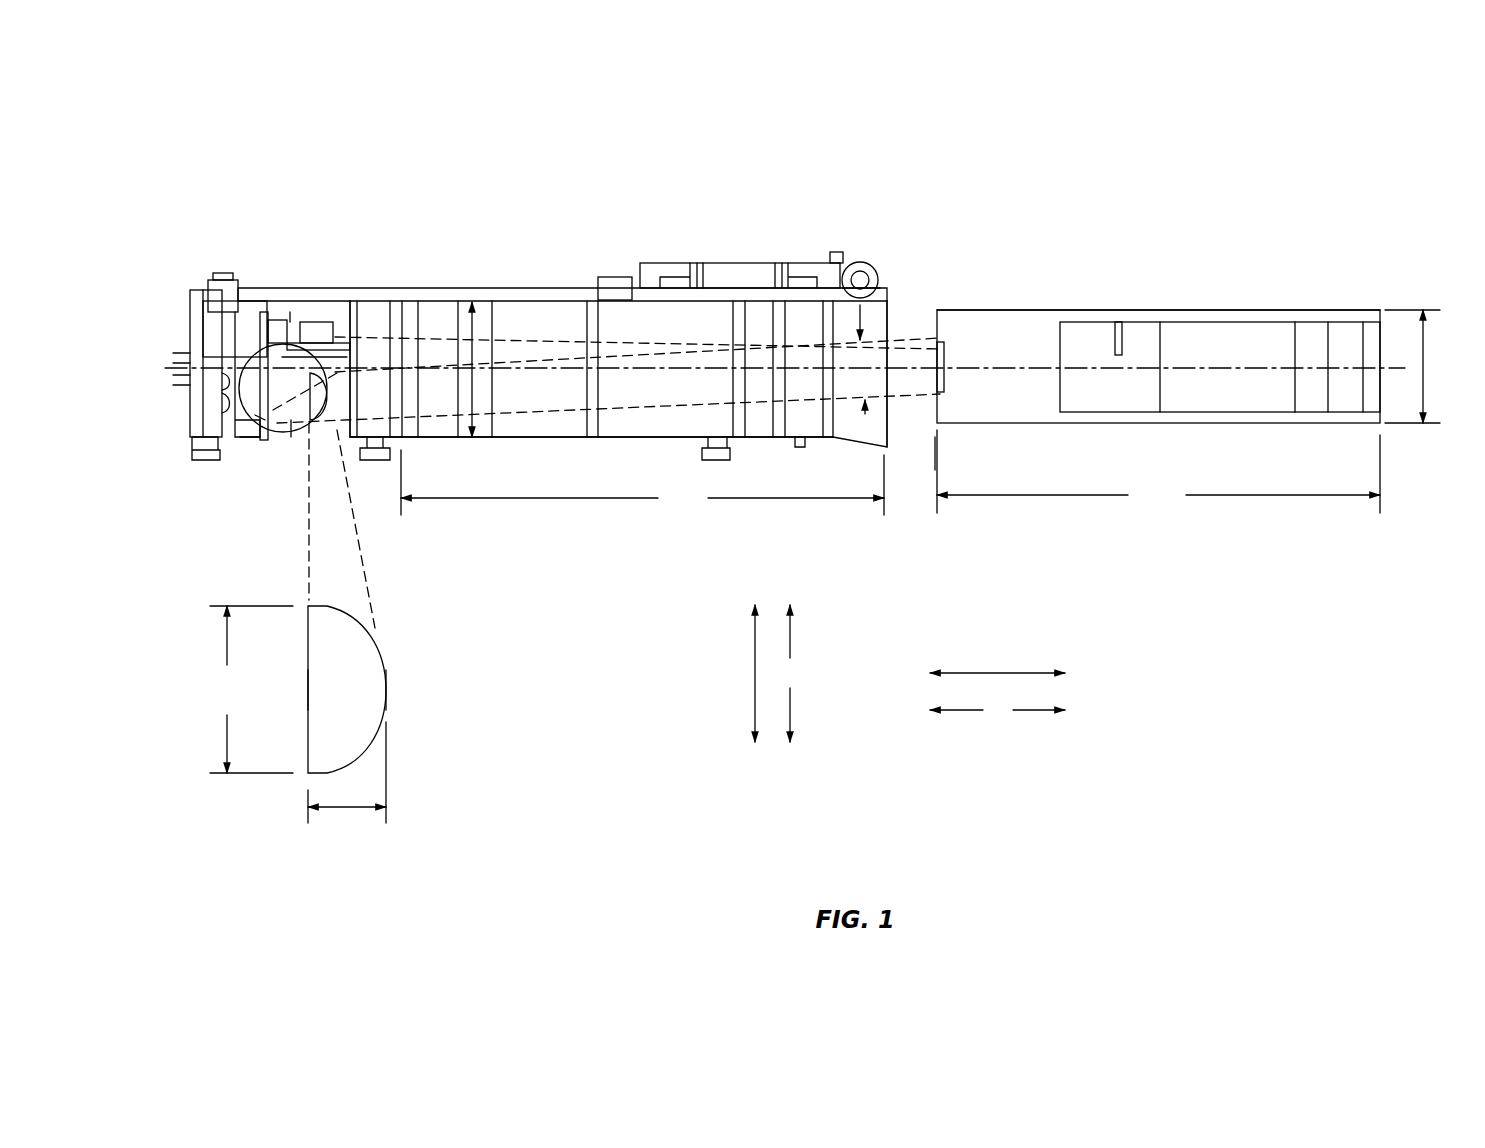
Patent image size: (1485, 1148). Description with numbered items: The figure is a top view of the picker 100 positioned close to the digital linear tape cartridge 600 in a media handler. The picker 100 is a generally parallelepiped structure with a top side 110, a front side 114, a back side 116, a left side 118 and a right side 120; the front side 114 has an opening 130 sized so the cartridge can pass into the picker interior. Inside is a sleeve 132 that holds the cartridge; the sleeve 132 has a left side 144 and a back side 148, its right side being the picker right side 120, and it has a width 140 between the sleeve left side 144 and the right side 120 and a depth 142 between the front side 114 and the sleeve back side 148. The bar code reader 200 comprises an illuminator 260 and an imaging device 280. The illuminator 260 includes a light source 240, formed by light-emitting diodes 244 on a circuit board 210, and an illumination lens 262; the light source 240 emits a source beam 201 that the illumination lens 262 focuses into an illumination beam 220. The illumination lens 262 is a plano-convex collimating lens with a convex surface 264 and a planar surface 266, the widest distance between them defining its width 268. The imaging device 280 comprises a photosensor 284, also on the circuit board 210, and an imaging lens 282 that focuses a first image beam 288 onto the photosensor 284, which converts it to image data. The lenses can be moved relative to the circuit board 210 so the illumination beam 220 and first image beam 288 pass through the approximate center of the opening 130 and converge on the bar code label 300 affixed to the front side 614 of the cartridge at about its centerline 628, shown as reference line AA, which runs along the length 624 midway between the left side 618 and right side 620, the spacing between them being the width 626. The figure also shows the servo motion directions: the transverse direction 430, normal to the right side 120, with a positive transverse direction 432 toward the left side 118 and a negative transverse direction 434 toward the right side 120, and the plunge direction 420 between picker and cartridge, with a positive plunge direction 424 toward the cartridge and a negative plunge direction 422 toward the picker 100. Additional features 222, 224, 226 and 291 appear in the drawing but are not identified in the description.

The picker 100 is at (652, 172).
The top side 110 is at (668, 336).
The front side 114 is at (897, 307).
The back side 116 is at (190, 325).
The left side 118 is at (492, 298).
The right side 120 is at (442, 437).
The opening 130 is at (905, 333).
The sleeve 132 is at (540, 300).
The width 140 is at (474, 382).
The depth 142 is at (642, 482).
The left side 144 is at (458, 300).
The back side 148 is at (418, 300).
The bar code reader 200 is at (327, 276).
The source beam 201 is at (291, 437).
The circuit board 210 is at (262, 443).
The illumination beam 220 is at (538, 420).
The circuit board 222 is at (812, 350).
The lower beam boundary 224 is at (665, 408).
The converging beam boundary 226 is at (863, 430).
The light source 240 is at (243, 470).
The light-emitting diodes 244 is at (262, 420).
The illuminator 260 is at (272, 457).
The illumination lens 262 is at (418, 633).
The convex surface 264 is at (386, 690).
The planar surface 266 is at (308, 692).
The width 268 is at (347, 812).
The imaging device 280 is at (277, 243).
The imaging lens 282 is at (330, 318).
The photosensor 284 is at (275, 318).
The first image beam 288 is at (619, 300).
The spacer 291 is at (297, 308).
The bar code label 300 is at (948, 392).
The plunge direction 420 is at (1000, 670).
The negative plunge direction 422 is at (970, 712).
The positive plunge direction 424 is at (1025, 712).
The transverse direction 430 is at (752, 672).
The positive transverse direction 432 is at (792, 648).
The negative transverse direction 434 is at (792, 703).
The digital linear tape cartridge 600 is at (1140, 270).
The front side 614 is at (912, 454).
The left side 618 is at (1042, 310).
The right side 620 is at (1158, 424).
The length 624 is at (1158, 471).
The width 626 is at (1423, 372).
The centerline 628 is at (1247, 365).